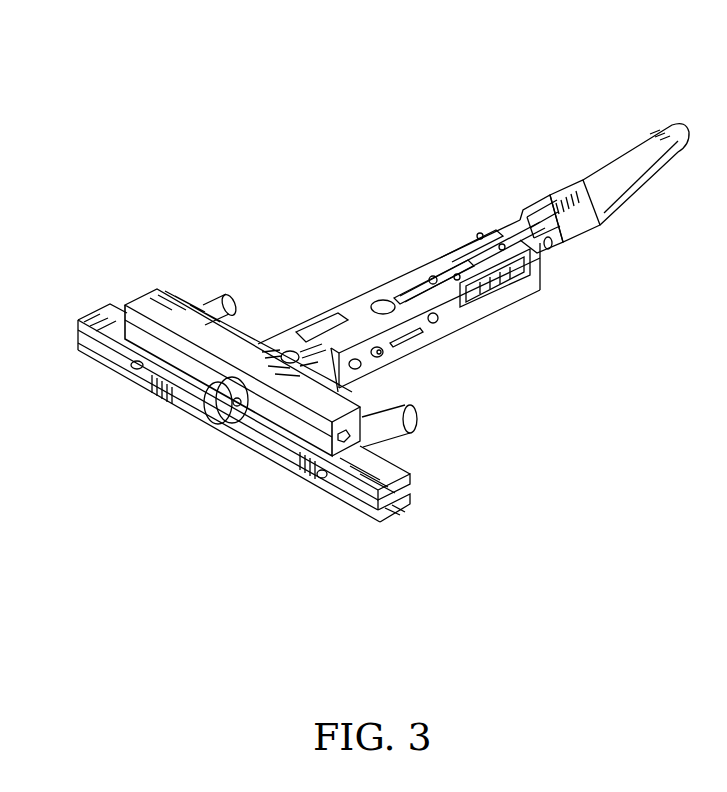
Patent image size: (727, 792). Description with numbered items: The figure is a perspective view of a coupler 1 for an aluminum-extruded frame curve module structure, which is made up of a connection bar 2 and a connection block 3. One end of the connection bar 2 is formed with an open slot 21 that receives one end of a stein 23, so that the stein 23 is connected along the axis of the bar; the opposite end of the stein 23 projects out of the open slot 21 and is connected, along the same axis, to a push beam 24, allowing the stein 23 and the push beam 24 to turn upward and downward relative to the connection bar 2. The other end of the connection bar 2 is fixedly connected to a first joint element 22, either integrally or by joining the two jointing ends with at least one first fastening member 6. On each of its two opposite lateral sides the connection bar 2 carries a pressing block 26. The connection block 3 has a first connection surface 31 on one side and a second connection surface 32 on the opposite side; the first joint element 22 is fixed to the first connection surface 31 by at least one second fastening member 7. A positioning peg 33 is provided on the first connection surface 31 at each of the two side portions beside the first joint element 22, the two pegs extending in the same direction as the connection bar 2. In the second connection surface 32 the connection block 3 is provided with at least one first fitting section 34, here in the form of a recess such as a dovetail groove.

The coupler 1 is at (390, 216).
The connection bar 2 is at (378, 283).
The open slot 21 is at (461, 232).
The first joint element 22 is at (306, 350).
The stein 23 is at (515, 237).
The push beam 24 is at (580, 182).
The pressing block 26 is at (503, 287).
The connection block 3 is at (157, 289).
The first connection surface 31 is at (202, 293).
The second connection surface 32 is at (113, 363).
The positioning peg 33 is at (240, 300).
The first fitting section 34 is at (270, 425).
The first fastening member 6 is at (385, 353).
The second fastening member 7 is at (215, 432).